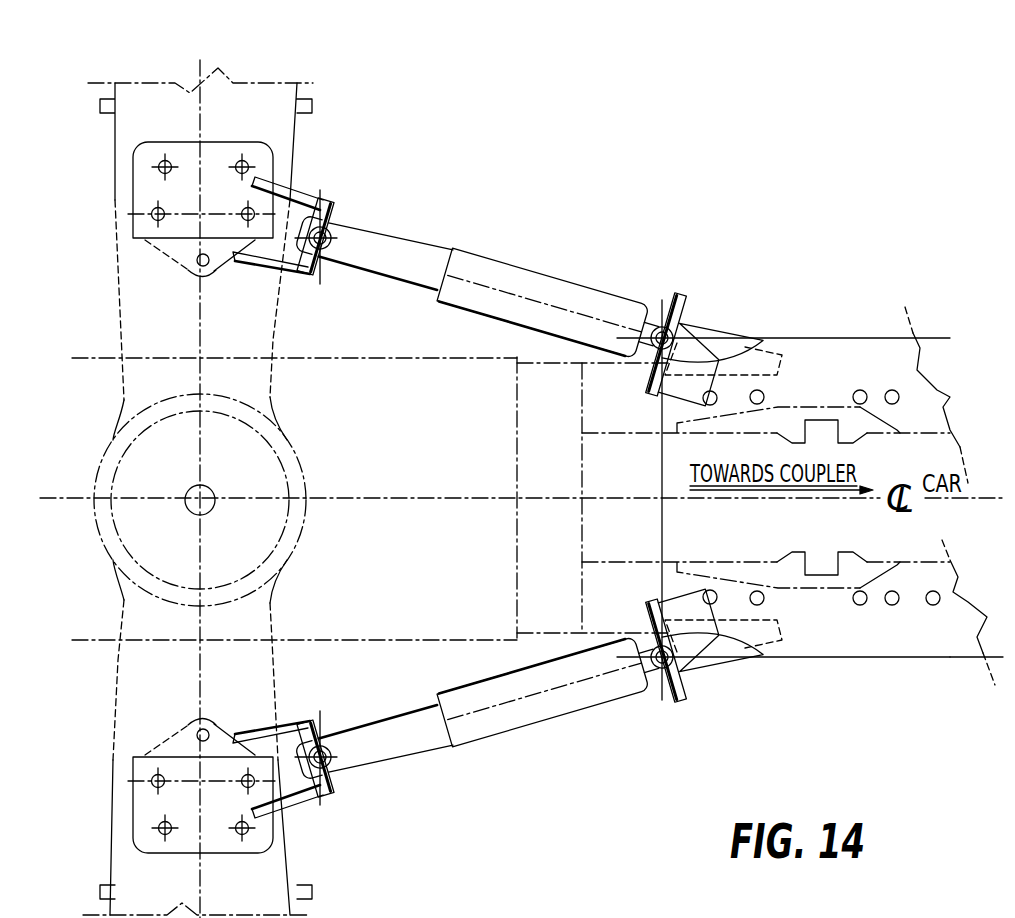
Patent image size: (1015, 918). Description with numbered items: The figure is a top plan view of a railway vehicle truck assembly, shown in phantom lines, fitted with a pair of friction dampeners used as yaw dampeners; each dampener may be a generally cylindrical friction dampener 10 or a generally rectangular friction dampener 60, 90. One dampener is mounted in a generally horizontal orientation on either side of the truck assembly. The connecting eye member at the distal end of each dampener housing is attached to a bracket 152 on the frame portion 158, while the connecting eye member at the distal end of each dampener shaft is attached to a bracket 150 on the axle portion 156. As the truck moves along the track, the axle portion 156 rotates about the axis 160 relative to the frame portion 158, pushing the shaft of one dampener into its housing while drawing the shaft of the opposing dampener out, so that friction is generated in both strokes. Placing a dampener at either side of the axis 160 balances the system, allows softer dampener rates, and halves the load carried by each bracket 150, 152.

The friction dampener 10 is at (491, 502).
The friction dampener 60 is at (491, 502).
The friction dampener 90 is at (507, 216).
The bracket 150 is at (324, 204).
The bracket 152 is at (683, 292).
The axle portion 156 is at (121, 302).
The frame portion 158 is at (840, 338).
The axis 160 is at (991, 497).